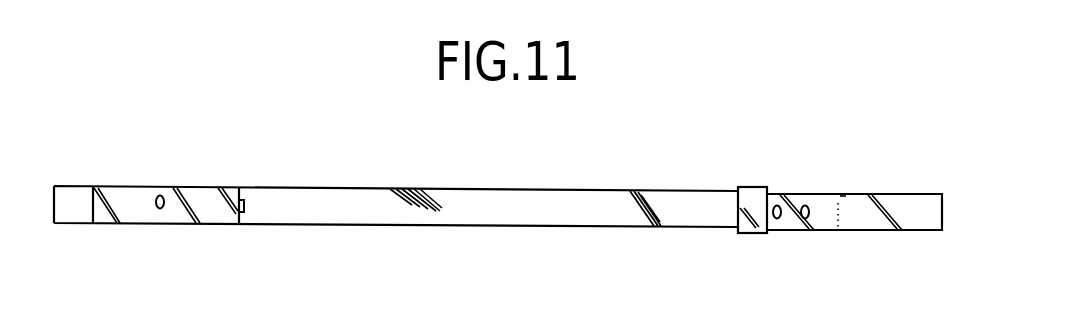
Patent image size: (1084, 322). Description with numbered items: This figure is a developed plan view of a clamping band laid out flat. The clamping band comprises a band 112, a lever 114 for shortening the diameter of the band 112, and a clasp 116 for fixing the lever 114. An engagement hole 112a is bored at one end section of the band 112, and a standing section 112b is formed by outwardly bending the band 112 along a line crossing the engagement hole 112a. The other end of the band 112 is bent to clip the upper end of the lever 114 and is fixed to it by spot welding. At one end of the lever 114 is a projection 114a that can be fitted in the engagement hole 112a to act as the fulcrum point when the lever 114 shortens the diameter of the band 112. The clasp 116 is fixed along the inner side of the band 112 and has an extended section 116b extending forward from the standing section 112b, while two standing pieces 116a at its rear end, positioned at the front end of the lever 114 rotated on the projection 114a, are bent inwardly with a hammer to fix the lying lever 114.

The band 112 is at (268, 223).
The engagement hole 112a is at (838, 197).
The standing section 112b is at (845, 197).
The lever 114 is at (127, 195).
The projection 114a is at (244, 204).
The clasp 116 is at (738, 207).
The standing pieces 116a is at (752, 187).
The extended section 116b is at (918, 220).